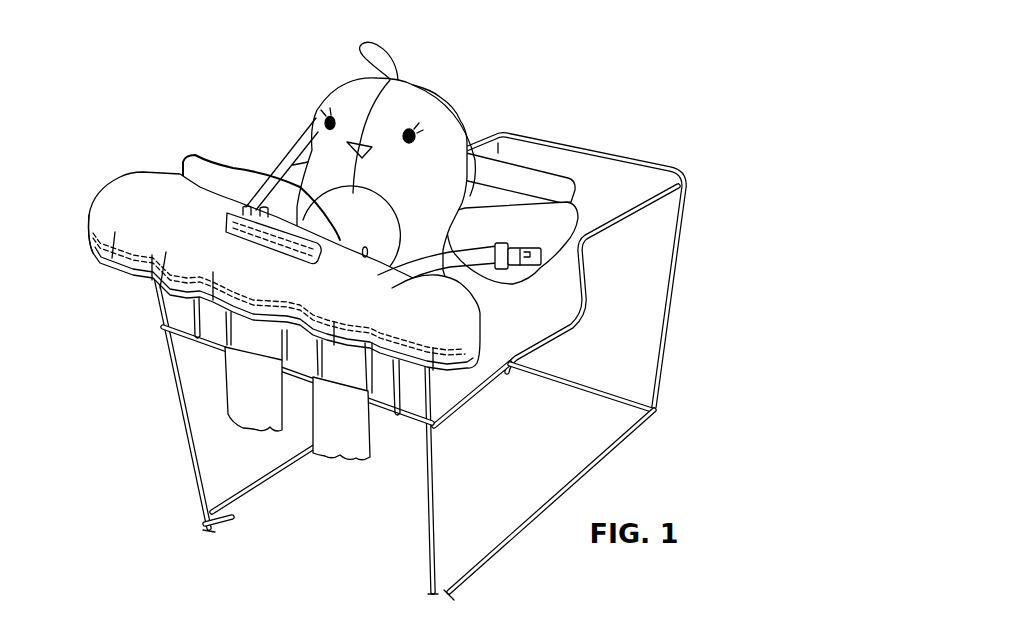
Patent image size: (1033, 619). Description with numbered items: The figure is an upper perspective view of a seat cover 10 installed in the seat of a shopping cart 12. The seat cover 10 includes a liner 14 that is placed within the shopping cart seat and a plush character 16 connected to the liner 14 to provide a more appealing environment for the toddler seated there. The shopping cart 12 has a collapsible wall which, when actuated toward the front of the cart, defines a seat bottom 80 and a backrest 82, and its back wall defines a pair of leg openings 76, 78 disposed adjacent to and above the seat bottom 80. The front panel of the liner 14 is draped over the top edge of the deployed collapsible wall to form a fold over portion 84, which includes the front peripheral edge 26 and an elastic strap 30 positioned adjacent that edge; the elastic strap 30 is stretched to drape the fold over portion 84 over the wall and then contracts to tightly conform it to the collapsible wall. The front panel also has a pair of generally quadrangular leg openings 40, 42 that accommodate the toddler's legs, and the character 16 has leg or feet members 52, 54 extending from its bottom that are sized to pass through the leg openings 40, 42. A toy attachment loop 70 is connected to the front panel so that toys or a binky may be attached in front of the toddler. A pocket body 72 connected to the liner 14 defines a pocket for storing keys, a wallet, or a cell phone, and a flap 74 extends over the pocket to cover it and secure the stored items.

The seat cover 10 is at (249, 78).
The shopping cart 12 is at (684, 154).
The liner 14 is at (134, 166).
The plush character 16 is at (342, 66).
The front peripheral edge 26 is at (138, 272).
The elastic strap 30 is at (93, 240).
The leg opening 40 is at (247, 330).
The leg opening 42 is at (337, 360).
The leg or feet member 52 is at (242, 410).
The leg or feet member 54 is at (339, 453).
The toy attachment loop 70 is at (392, 243).
The pocket body 72 is at (278, 180).
The flap 74 is at (229, 207).
The leg opening 76 is at (210, 318).
The leg opening 78 is at (388, 392).
The seat bottom 80 is at (450, 418).
The backrest 82 is at (510, 370).
The fold over portion 84 is at (119, 245).